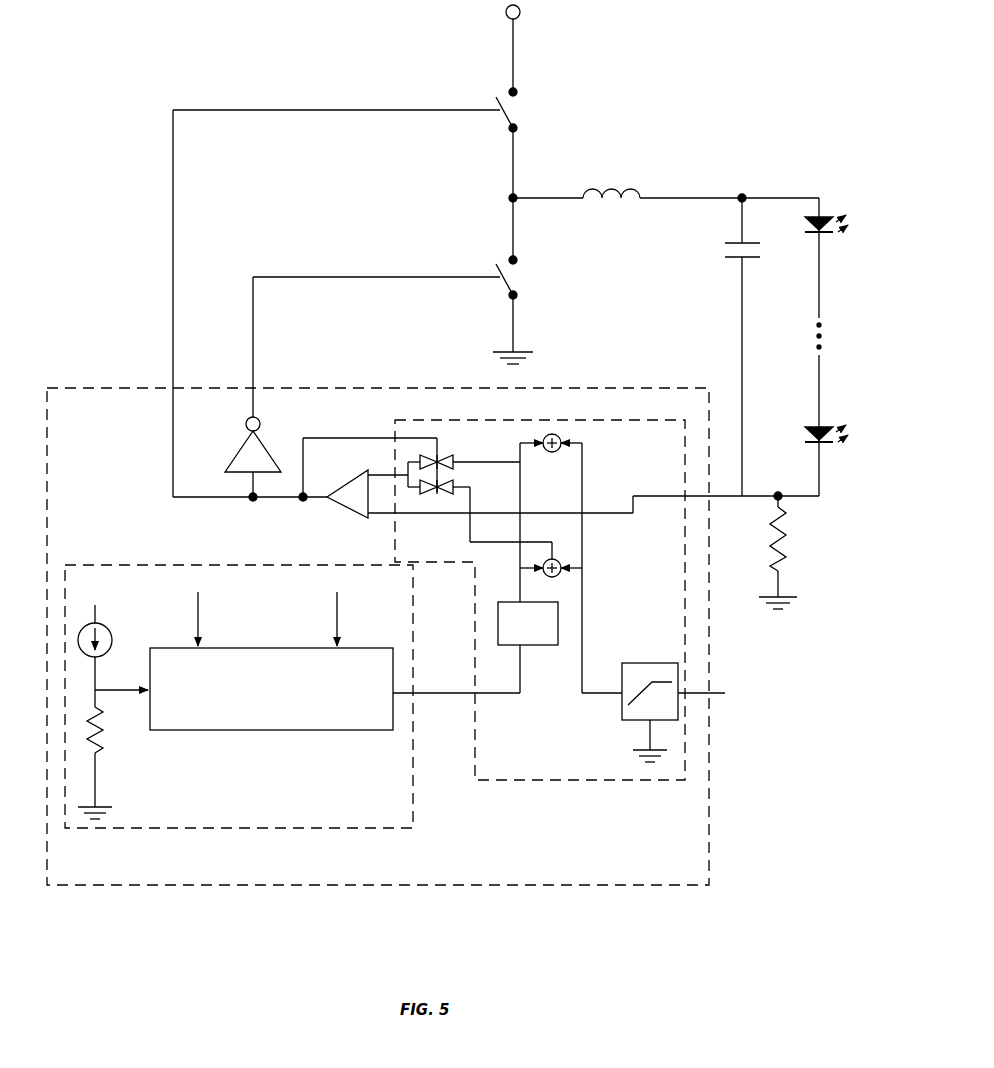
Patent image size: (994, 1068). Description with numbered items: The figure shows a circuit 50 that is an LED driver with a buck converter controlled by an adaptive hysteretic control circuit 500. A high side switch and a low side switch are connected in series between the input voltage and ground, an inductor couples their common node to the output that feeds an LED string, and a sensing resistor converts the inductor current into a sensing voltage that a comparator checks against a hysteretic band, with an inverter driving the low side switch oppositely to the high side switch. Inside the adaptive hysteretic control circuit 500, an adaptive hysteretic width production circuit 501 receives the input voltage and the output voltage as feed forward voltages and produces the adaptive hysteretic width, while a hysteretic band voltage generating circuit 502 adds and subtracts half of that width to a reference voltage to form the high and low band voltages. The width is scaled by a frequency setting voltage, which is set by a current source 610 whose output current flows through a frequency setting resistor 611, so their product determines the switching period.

The circuit 50 is at (641, 108).
The adaptive hysteretic control circuit 500 is at (527, 885).
The adaptive hysteretic width production circuit 501 is at (180, 828).
The hysteretic band voltage generating circuit 502 is at (531, 780).
The current source 610 is at (106, 631).
The frequency setting resistor 611 is at (111, 739).